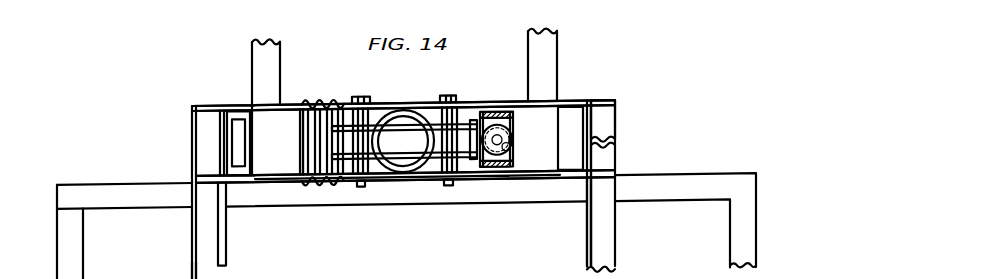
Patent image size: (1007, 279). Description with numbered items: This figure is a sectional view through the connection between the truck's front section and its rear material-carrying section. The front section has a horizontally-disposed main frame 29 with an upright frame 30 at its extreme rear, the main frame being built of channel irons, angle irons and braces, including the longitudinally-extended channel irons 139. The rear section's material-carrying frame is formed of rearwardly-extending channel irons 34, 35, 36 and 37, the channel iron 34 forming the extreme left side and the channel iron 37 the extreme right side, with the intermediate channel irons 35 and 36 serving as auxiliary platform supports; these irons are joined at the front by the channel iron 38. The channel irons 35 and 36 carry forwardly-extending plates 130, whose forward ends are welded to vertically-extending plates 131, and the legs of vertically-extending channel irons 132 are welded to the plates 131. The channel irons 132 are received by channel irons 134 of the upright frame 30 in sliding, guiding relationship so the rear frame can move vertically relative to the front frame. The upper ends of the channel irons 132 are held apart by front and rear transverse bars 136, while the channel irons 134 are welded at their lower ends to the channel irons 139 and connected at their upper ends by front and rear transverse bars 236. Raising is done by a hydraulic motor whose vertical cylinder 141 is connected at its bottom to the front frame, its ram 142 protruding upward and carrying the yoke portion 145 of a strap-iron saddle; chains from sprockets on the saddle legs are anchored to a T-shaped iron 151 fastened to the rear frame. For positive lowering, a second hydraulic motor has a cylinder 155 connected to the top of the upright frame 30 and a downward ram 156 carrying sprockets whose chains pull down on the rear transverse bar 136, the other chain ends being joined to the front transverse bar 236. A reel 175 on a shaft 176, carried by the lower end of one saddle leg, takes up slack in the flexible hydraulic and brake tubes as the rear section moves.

The main frame 29 is at (276, 52).
The upright frame 30 is at (604, 99).
The channel iron 34 is at (72, 255).
The channel iron 35 is at (213, 278).
The channel iron 36 is at (619, 106).
The channel iron 37 is at (737, 238).
The channel iron 38 is at (160, 184).
The forwardly-extending plate 130 is at (591, 129).
The vertically-extending plate 131 is at (210, 176).
The vertically-extending channel iron 132 is at (238, 113).
The channel iron 134 is at (253, 126).
The transverse bar 136 is at (207, 111).
The longitudinally-extended channel iron 139 is at (257, 44).
The cylinder 141 is at (383, 166).
The ram 142 is at (407, 163).
The yoke portion 145 is at (418, 134).
The T-shaped iron 151 is at (452, 203).
The cylinder 155 is at (508, 147).
The ram 156 is at (511, 127).
The reel 175 is at (305, 100).
The shaft 176 is at (303, 142).
The transverse bar 236 is at (472, 108).